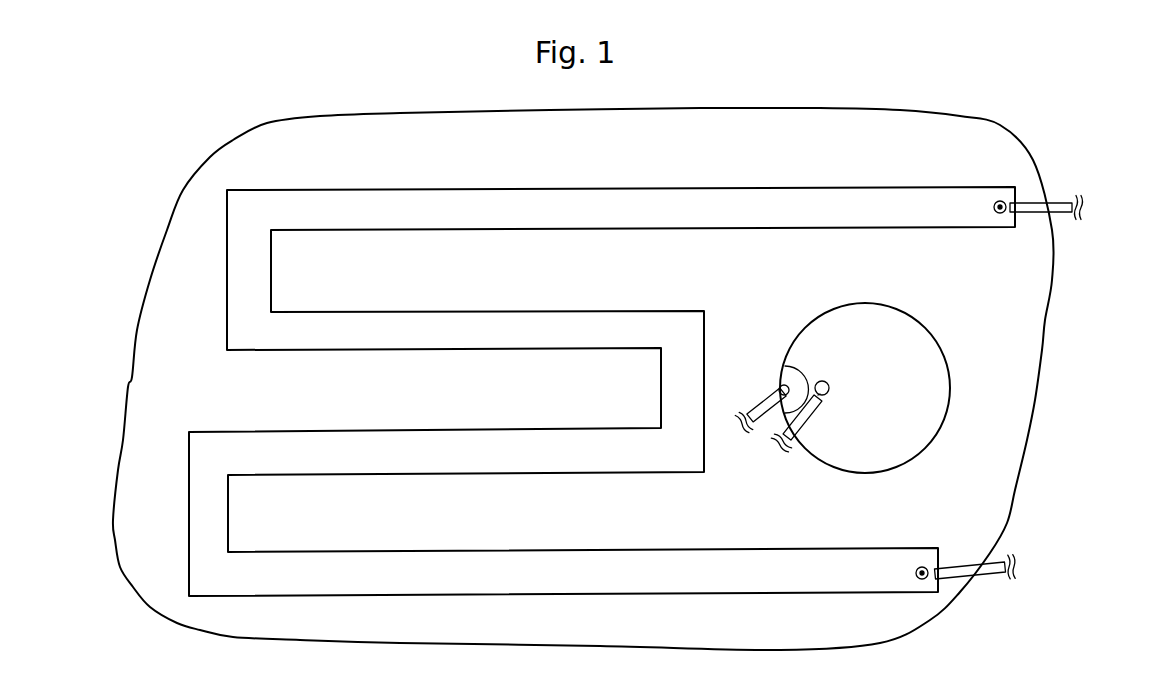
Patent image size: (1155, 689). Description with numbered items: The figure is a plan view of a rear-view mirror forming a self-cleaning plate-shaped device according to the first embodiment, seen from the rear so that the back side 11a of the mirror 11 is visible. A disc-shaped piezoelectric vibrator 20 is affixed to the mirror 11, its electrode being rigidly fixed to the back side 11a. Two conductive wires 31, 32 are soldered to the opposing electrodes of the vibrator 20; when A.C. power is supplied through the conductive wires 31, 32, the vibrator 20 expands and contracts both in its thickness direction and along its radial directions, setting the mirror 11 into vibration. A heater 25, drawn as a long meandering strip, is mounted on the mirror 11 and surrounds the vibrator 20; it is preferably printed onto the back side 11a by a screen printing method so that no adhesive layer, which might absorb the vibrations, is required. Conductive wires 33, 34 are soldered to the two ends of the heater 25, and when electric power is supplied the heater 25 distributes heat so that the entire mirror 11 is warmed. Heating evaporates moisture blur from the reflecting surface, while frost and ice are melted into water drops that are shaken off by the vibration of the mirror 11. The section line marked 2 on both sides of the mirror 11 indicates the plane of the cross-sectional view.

The mirror 11 is at (150, 588).
The back side of the mirror 11a is at (370, 402).
The piezoelectric vibrator 20 is at (928, 368).
The heater 25 is at (978, 198).
The conductive wire 31 is at (788, 443).
The conductive wire 32 is at (757, 398).
The conductive wire 33 is at (1035, 205).
The conductive wire 34 is at (958, 576).
The section line II-II 2 is at (122, 387).